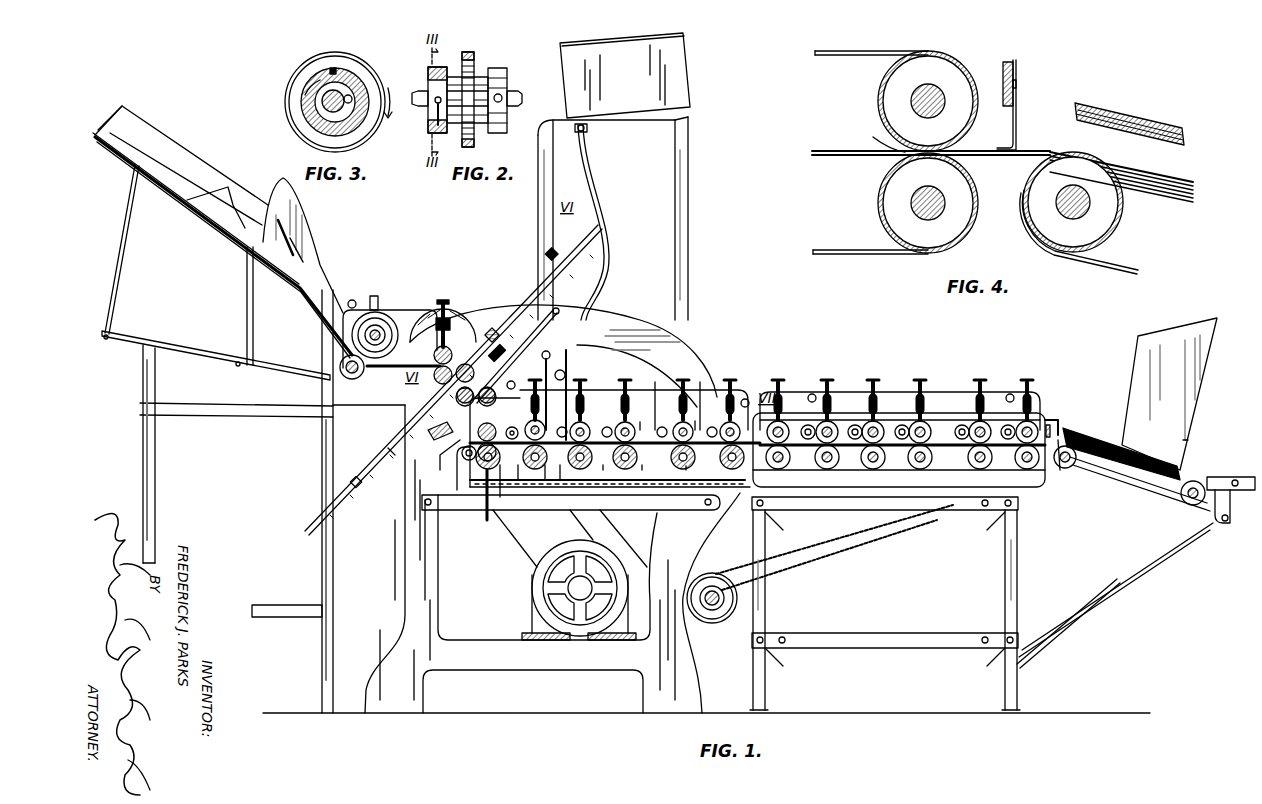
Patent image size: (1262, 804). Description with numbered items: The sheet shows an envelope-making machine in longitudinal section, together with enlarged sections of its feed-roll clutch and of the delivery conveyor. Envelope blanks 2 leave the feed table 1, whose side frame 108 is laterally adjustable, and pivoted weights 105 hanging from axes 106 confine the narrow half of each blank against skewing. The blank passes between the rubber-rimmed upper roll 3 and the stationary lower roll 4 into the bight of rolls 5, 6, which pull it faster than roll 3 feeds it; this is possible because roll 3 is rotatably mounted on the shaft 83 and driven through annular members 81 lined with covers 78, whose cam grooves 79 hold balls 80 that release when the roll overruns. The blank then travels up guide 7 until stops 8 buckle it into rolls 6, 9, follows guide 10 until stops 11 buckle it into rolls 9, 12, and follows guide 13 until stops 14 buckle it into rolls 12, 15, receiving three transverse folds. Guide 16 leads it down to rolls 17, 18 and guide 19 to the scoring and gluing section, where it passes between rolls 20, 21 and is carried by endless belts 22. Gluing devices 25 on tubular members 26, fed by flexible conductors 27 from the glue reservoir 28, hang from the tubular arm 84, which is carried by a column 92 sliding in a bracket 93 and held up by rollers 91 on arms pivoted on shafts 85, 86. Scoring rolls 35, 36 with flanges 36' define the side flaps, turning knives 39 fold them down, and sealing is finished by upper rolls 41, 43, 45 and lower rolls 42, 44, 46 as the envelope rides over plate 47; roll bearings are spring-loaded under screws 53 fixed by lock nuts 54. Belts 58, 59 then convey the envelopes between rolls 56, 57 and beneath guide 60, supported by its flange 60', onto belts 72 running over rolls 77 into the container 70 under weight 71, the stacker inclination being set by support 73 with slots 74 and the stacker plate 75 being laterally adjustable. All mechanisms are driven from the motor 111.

In FIG. 1, the feed table 1 is at (190, 172).
In FIG. 1, the envelope blank 2 is at (247, 210).
In FIG. 4, the envelope blank 2 is at (812, 152).
In FIG. 1, the upper feed roll 3 is at (378, 330).
In FIG. 3, the upper feed roll 3 is at (365, 63).
In FIG. 2, the upper feed roll 3 is at (468, 52).
In FIG. 1, the lower feed roll 4 is at (347, 400).
In FIG. 1, the feed roll 5 is at (447, 315).
In FIG. 1, the feed roll 6 is at (432, 384).
In FIG. 1, the upwardly extending guide 7 is at (535, 285).
In FIG. 1, the stops 8 is at (547, 254).
In FIG. 1, the feed roll 9 is at (485, 338).
In FIG. 1, the guide 10 is at (393, 447).
In FIG. 1, the stops 11 is at (360, 488).
In FIG. 1, the feed roll 12 is at (434, 438).
In FIG. 1, the guide 13 is at (556, 308).
In FIG. 1, the stops 14 is at (500, 346).
In FIG. 1, the feed roll 15 is at (510, 381).
In FIG. 1, the guide 16 is at (445, 458).
In FIG. 1, the upper roll 17 is at (478, 438).
In FIG. 1, the lower roll 18 is at (478, 458).
In FIG. 1, the guide 19 is at (530, 424).
In FIG. 1, the upper rolls 20 is at (585, 393).
In FIG. 1, the lower rolls 21 is at (546, 483).
In FIG. 1, the endless belts 22 is at (655, 380).
In FIG. 1, the gluing devices 25 is at (615, 385).
In FIG. 1, the tubular depending members 26 is at (553, 374).
In FIG. 1, the flexible pipe conductors 27 is at (607, 288).
In FIG. 1, the glue reservoir 28 is at (625, 75).
In FIG. 1, the upper scoring rolls 35 is at (630, 400).
In FIG. 1, the lower scoring rolls 36 is at (610, 478).
In FIG. 1, the flanges of lower scoring rolls 36' is at (615, 488).
In FIG. 1, the turning knives 39 is at (700, 385).
In FIG. 1, the upper sealing roll 41 is at (640, 422).
In FIG. 1, the lower sealing roll 42 is at (642, 470).
In FIG. 1, the upper sealing roll 43 is at (695, 421).
In FIG. 1, the lower sealing roll 44 is at (686, 470).
In FIG. 1, the upper sealing roll 45 is at (747, 399).
In FIG. 1, the lower sealing roll 46 is at (720, 572).
In FIG. 1, the plate 47 is at (628, 525).
In FIG. 1, the screws 53 is at (485, 512).
In FIG. 1, the lock nuts 54 is at (480, 505).
In FIG. 1, the upper rolls 56 is at (780, 420).
In FIG. 4, the upper rolls 56 is at (879, 96).
In FIG. 1, the lower rolls 57 is at (790, 472).
In FIG. 4, the lower rolls 57 is at (879, 197).
In FIG. 1, the endless belt 58 is at (945, 418).
In FIG. 4, the endless belt 58 is at (818, 53).
In FIG. 1, the endless belt 59 is at (940, 472).
In FIG. 4, the endless belt 59 is at (812, 156).
In FIG. 1, the guide 60 is at (1058, 413).
In FIG. 4, the guide 60 is at (998, 105).
In FIG. 1, the flange 60' is at (1072, 419).
In FIG. 4, the flange 60' is at (1028, 88).
In FIG. 1, the container 70 is at (1188, 440).
In FIG. 1, the weight 71 is at (1120, 440).
In FIG. 4, the weight 71 is at (1125, 115).
In FIG. 1, the endless belts 72 is at (1108, 452).
In FIG. 4, the endless belts 72 is at (1180, 180).
In FIG. 1, the support 73 is at (1118, 590).
In FIG. 1, the slots 74 is at (1050, 633).
In FIG. 1, the stacker plate 75 is at (1165, 345).
In FIG. 1, the rolls 77 is at (1065, 470).
In FIG. 4, the rolls 77 is at (1118, 213).
In FIG. 1, the annular covers 78 is at (430, 315).
In FIG. 3, the annular covers 78 is at (313, 72).
In FIG. 2, the annular covers 78 is at (497, 68).
In FIG. 3, the cam grooves 79 is at (333, 108).
In FIG. 2, the cam grooves 79 is at (508, 80).
In FIG. 3, the balls 80 is at (352, 97).
In FIG. 2, the balls 80 is at (500, 112).
In FIG. 1, the annular members 81 is at (335, 340).
In FIG. 3, the annular members 81 is at (334, 69).
In FIG. 2, the annular members 81 is at (475, 70).
In FIG. 1, the shaft 83 is at (375, 330).
In FIG. 3, the shaft 83 is at (302, 92).
In FIG. 2, the shaft 83 is at (522, 97).
In FIG. 1, the transverse tubular arm 84 is at (548, 352).
In FIG. 1, the transverse shaft 85 is at (500, 512).
In FIG. 1, the transverse shaft 86 is at (520, 483).
In FIG. 1, the rollers 91 is at (560, 482).
In FIG. 1, the column 92 is at (570, 345).
In FIG. 1, the frame guide bracket 93 is at (568, 375).
In FIG. 1, the weights 105 is at (237, 192).
In FIG. 1, the pivotal axes 106 is at (232, 190).
In FIG. 1, the side frame 108 is at (173, 150).
In FIG. 1, the motor 111 is at (530, 590).